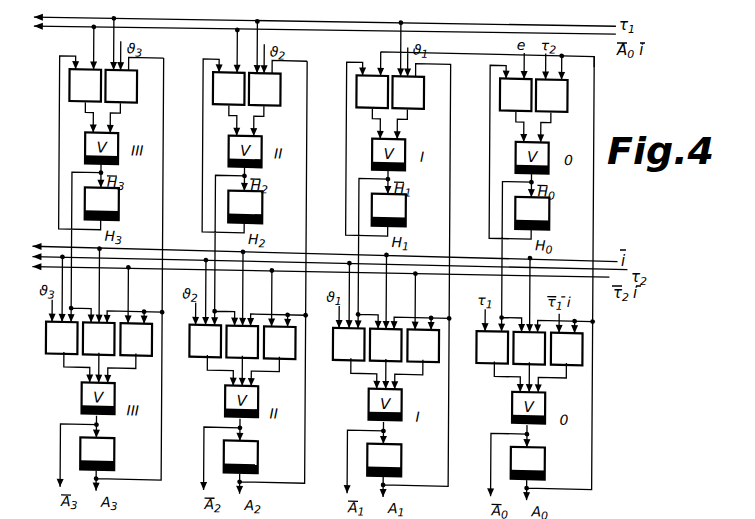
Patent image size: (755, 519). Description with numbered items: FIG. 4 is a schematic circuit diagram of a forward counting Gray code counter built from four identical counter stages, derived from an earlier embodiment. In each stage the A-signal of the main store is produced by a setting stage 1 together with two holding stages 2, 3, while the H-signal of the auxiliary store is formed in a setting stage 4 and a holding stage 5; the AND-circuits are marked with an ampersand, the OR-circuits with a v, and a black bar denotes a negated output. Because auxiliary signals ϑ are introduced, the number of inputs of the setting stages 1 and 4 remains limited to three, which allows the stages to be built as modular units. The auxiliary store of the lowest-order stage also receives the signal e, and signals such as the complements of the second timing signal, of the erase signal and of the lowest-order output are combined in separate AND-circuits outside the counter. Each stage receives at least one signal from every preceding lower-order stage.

The setting stage 1 is at (277, 343).
The holding stage 2 is at (314, 343).
The holding stage 3 is at (351, 344).
The setting stage 4 is at (336, 91).
The holding stage 5 is at (300, 90).